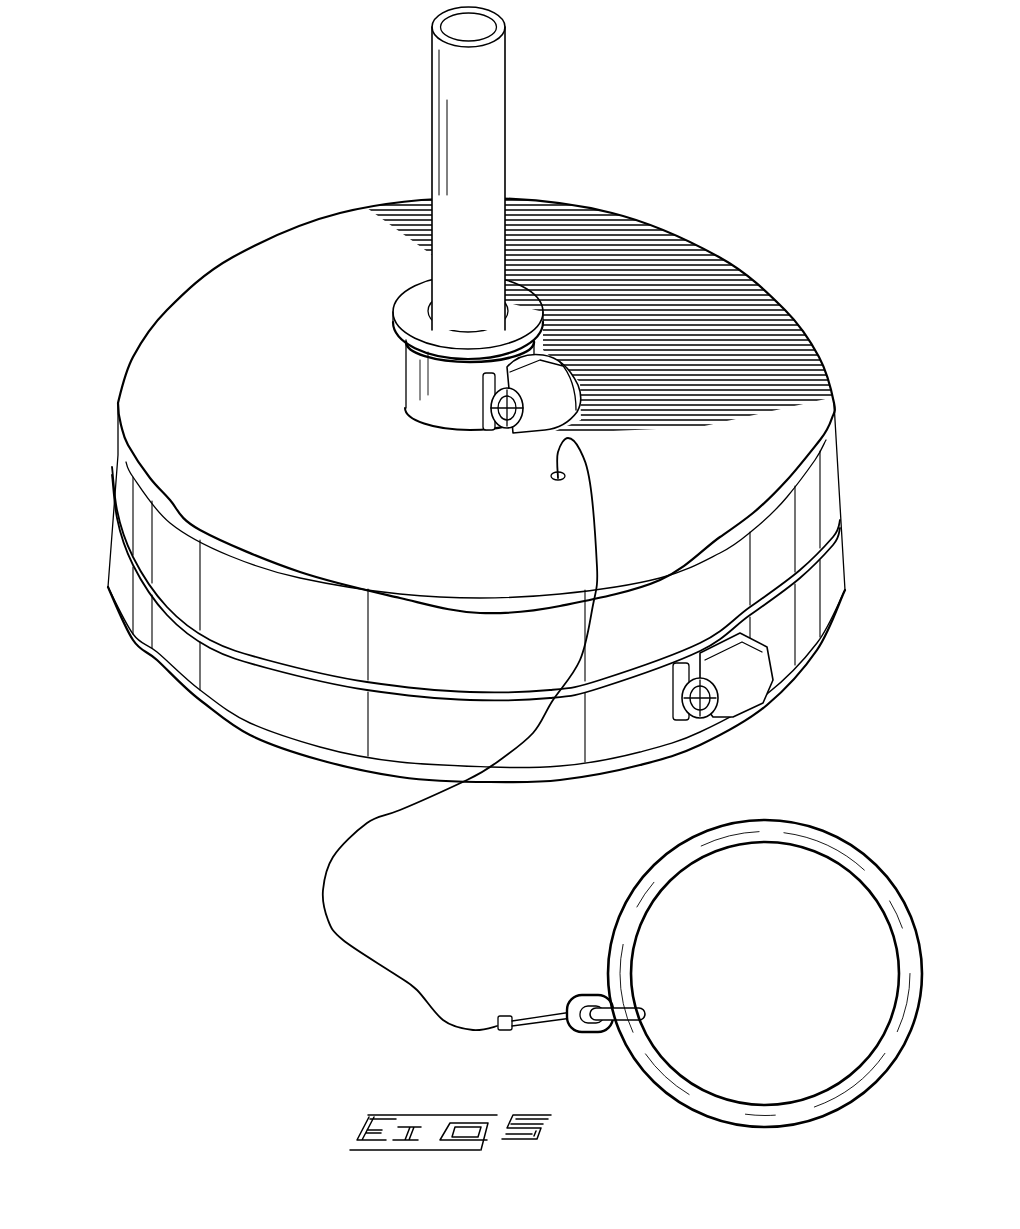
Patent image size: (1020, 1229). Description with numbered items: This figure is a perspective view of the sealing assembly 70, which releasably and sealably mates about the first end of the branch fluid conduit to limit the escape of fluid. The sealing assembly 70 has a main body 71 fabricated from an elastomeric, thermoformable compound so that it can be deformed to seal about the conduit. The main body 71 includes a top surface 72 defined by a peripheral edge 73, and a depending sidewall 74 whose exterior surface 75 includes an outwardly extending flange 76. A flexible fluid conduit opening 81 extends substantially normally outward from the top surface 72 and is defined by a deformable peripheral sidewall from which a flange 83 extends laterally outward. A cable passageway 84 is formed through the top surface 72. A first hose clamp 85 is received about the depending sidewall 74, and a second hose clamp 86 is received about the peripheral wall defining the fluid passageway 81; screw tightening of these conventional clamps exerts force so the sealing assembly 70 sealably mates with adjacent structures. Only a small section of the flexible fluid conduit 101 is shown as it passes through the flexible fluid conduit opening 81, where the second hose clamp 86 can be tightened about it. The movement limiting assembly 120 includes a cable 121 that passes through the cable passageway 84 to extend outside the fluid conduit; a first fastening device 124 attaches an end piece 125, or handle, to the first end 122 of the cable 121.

The sealing assembly 70 is at (752, 206).
The main body 71 is at (684, 503).
The top surface 72 is at (158, 343).
The peripheral edge 73 is at (612, 205).
The depending sidewall 74 is at (328, 646).
The exterior surface 75 is at (117, 482).
The outwardly extending flange 76 is at (264, 744).
The flexible fluid conduit opening 81 is at (515, 300).
The flange 83 is at (412, 298).
The cable passageway 84 is at (553, 480).
The first hose clamp 85 is at (812, 603).
The second hose clamp 86 is at (433, 397).
The flexible fluid conduit 101 is at (492, 88).
The movement limiting assembly 120 is at (306, 965).
The cable 121 is at (377, 823).
The first end 122 is at (443, 1027).
The first fastening device 124 is at (563, 1020).
The end piece 125 is at (793, 833).